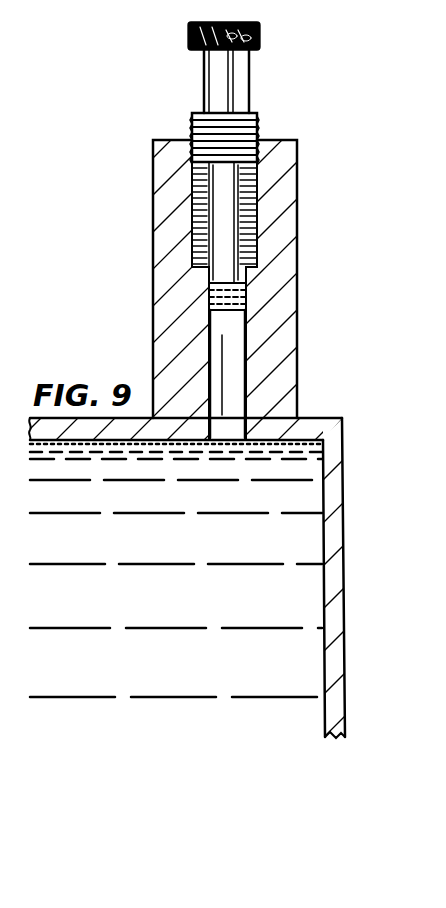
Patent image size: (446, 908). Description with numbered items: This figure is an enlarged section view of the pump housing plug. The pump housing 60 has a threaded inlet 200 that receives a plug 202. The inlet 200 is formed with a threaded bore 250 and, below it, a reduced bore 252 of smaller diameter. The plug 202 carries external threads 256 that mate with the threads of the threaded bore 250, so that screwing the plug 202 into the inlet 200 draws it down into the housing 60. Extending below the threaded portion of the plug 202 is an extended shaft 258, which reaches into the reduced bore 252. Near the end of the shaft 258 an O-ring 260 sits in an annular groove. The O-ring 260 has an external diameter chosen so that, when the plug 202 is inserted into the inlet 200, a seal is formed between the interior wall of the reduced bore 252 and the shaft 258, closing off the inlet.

The pump housing 60 is at (345, 520).
The threaded inlet 200 is at (361, 122).
The plug 202 is at (262, 38).
The threaded bore 250 is at (268, 242).
The reduced bore 252 is at (249, 379).
The external threads 256 is at (258, 128).
The extended shaft 258 is at (256, 197).
The O-ring 260 is at (243, 287).